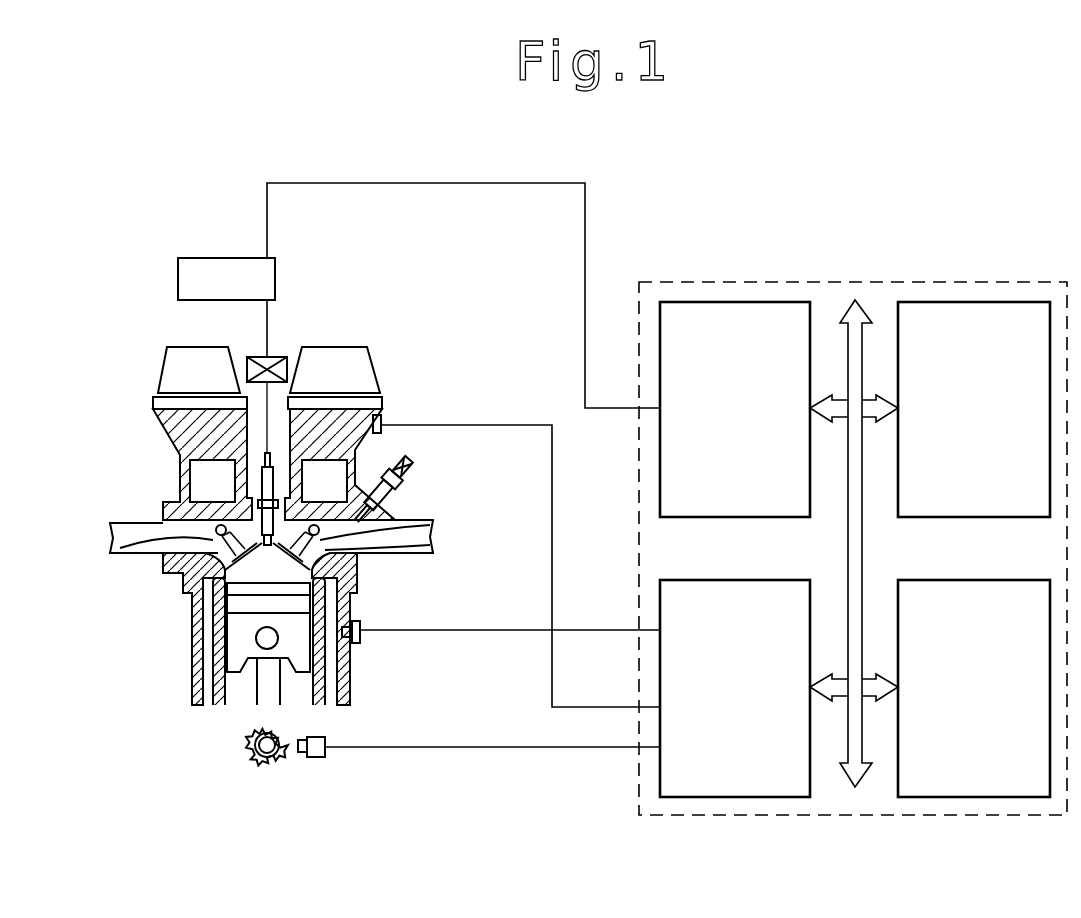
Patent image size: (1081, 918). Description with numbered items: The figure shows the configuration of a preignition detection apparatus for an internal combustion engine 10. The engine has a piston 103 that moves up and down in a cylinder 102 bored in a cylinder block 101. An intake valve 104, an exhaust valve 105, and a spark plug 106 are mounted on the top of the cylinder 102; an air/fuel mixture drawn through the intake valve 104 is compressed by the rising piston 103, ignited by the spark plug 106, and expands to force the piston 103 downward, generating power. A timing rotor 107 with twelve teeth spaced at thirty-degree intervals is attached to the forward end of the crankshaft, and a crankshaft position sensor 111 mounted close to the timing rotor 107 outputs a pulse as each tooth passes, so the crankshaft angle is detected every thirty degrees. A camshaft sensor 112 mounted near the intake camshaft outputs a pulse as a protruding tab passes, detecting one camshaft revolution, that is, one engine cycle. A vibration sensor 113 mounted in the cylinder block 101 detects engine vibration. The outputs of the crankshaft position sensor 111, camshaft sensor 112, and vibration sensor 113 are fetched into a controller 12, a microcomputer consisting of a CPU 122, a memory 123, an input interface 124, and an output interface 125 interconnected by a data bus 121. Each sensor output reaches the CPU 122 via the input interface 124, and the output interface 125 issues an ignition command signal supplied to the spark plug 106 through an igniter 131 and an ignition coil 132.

The internal combustion engine 10 is at (276, 786).
The controller 12 is at (943, 282).
The cylinder block 101 is at (357, 563).
The cylinder 102 is at (260, 573).
The piston 103 is at (240, 648).
The intake valve 104 is at (400, 525).
The exhaust valve 105 is at (227, 540).
The spark plug 106 is at (260, 485).
The timing rotor 107 is at (255, 758).
The crankshaft position sensor 111 is at (325, 738).
The camshaft sensor 112 is at (383, 420).
The vibration sensor 113 is at (362, 628).
The data bus 121 is at (860, 305).
The CPU 122 is at (1013, 302).
The memory 123 is at (980, 797).
The input interface 124 is at (760, 797).
The output interface 125 is at (738, 302).
The igniter 131 is at (204, 258).
The ignition coil 132 is at (277, 357).